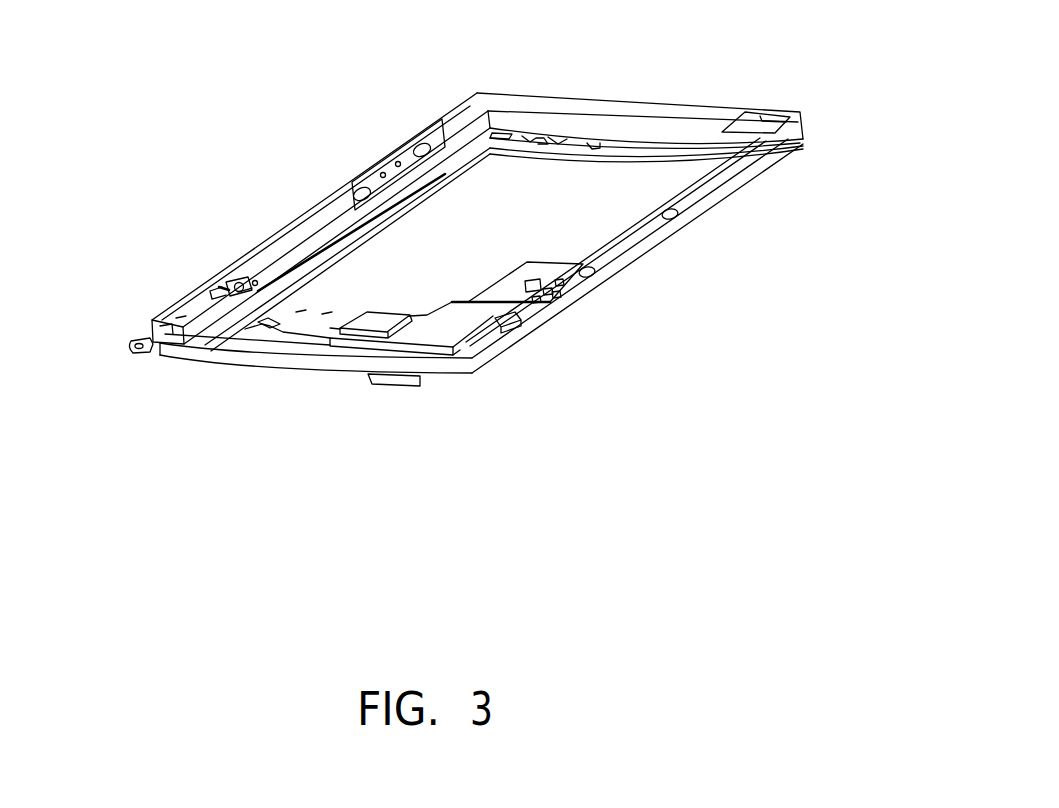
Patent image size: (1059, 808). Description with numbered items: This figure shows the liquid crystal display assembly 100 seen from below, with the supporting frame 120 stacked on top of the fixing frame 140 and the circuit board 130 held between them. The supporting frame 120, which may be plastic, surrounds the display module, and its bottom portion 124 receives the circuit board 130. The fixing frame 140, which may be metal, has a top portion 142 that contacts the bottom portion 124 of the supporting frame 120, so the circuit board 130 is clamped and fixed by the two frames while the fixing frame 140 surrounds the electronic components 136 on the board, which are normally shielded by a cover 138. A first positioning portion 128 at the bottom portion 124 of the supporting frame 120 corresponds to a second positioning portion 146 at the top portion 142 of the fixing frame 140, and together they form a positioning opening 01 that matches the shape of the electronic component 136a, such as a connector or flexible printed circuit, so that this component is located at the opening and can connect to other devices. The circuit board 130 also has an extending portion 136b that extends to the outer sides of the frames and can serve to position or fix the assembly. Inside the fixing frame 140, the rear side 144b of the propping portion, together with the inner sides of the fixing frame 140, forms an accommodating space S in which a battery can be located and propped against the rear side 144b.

The liquid crystal display assembly 100 is at (730, 62).
The supporting frame 120 is at (808, 118).
The fixing frame 140 is at (808, 140).
The circuit board 130 is at (700, 187).
The rear side of propping portion 144b is at (490, 337).
The accommodating space S is at (423, 356).
The positioning opening 01 is at (250, 277).
The first positioning portion 128 is at (232, 277).
The electronic component 136a is at (230, 276).
The bottom portion 124 is at (165, 323).
The extending portion 136b is at (136, 336).
The top portion 142 is at (180, 320).
The second positioning portion 146 is at (243, 296).
The electronic components 136 is at (300, 313).
The cover 138 is at (327, 316).